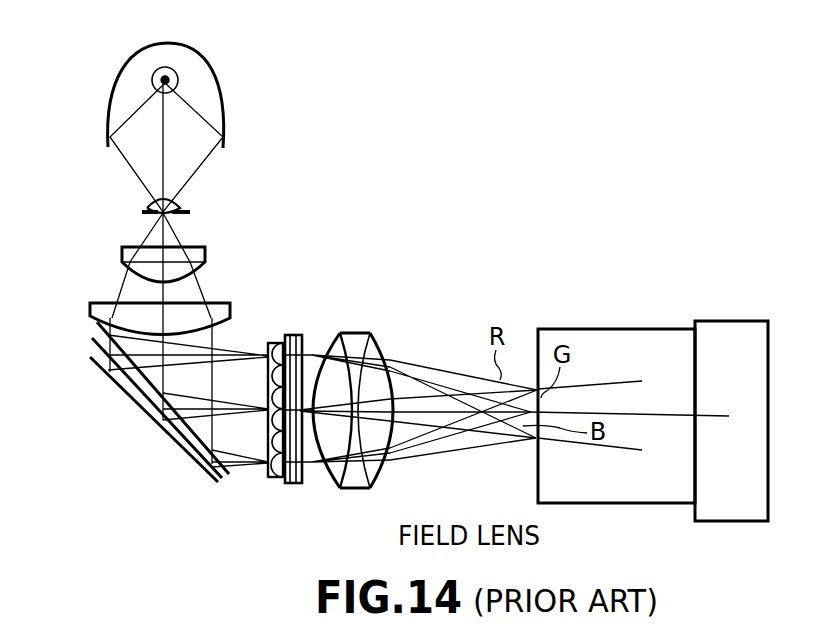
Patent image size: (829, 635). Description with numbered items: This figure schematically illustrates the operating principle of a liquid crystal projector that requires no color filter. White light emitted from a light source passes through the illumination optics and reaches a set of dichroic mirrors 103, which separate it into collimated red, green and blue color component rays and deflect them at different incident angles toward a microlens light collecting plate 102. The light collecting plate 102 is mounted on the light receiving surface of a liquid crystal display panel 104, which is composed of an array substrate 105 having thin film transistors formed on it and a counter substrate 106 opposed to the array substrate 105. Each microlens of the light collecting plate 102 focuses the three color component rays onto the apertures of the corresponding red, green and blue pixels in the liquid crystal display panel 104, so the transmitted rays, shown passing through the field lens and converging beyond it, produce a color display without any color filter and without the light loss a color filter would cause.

The microlens light collecting plate 102 is at (275, 478).
The dichroic mirrors 103 is at (88, 320).
The liquid crystal display panel 104 is at (294, 331).
The array substrate 105 is at (302, 481).
The counter substrate 106 is at (287, 484).